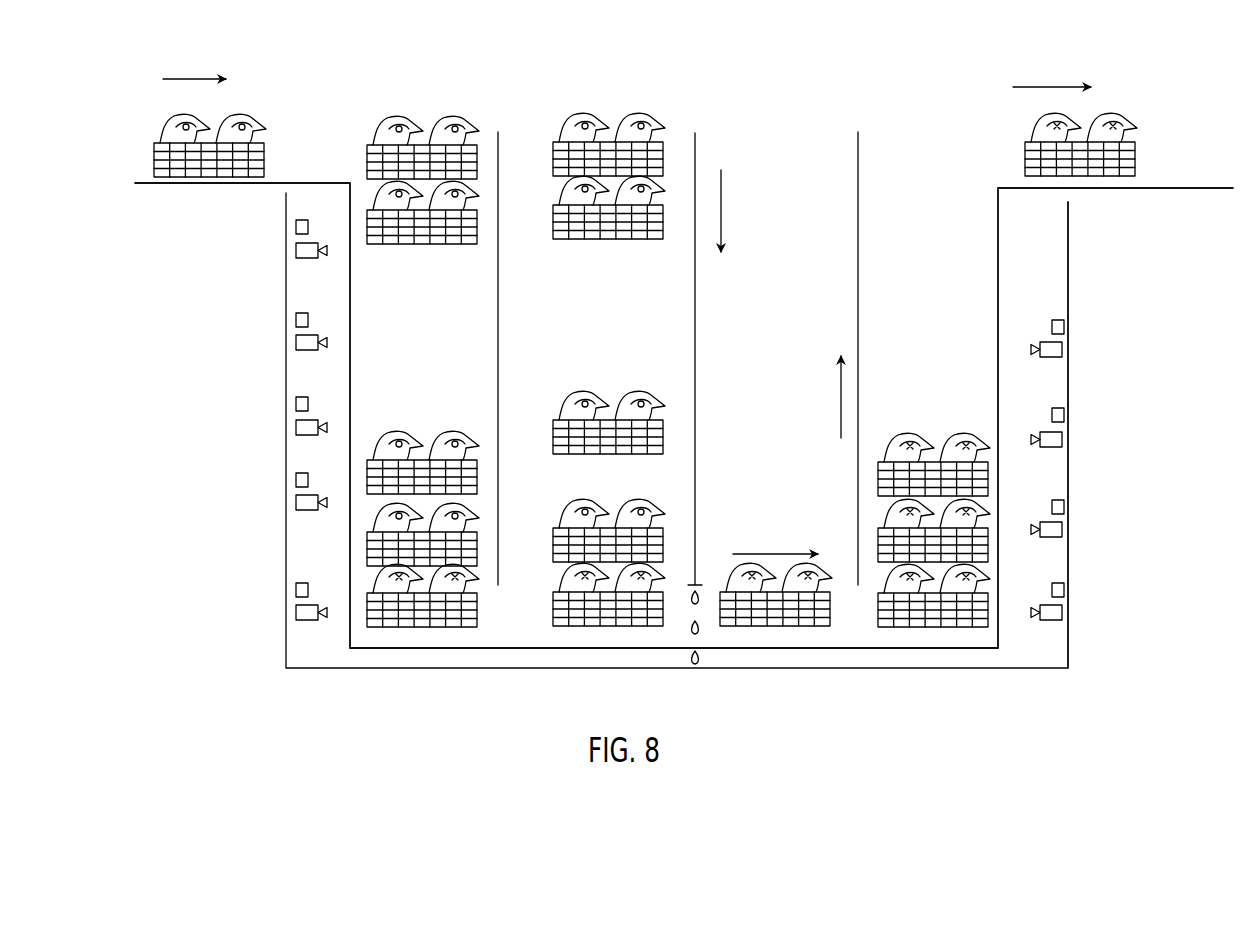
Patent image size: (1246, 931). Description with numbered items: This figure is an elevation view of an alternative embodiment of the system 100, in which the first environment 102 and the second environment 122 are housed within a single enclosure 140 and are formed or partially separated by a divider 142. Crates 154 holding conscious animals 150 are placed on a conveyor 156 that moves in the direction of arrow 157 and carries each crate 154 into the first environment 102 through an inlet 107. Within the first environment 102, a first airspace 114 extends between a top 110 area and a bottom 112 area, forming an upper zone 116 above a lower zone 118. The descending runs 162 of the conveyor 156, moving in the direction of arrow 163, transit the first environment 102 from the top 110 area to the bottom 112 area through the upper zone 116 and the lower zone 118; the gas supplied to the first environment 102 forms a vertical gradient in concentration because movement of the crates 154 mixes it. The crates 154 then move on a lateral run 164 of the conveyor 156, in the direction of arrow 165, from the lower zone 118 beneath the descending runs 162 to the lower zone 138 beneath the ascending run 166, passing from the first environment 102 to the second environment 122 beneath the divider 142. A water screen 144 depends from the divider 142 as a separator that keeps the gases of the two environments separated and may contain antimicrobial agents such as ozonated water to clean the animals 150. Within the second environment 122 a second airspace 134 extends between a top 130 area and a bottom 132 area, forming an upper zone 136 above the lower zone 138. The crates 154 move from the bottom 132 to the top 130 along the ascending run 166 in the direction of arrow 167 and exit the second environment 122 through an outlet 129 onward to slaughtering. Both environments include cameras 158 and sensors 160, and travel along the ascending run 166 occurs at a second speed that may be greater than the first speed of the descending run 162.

The system 100 is at (703, 112).
The first environment 102 is at (472, 95).
The inlet 107 is at (348, 108).
The top area 110 is at (316, 291).
The bottom area 112 is at (306, 566).
The first airspace 114 is at (573, 85).
The upper zone 116 is at (355, 275).
The lower zone 118 is at (320, 548).
The second environment 122 is at (920, 150).
The outlet 129 is at (992, 150).
The top area 130 is at (1033, 232).
The bottom area 132 is at (1050, 563).
The second airspace 134 is at (855, 112).
The upper zone 136 is at (982, 294).
The lower zone 138 is at (985, 470).
The enclosure 140 is at (285, 378).
The divider 142 is at (697, 318).
The water screen 144 is at (696, 673).
The animal 150 is at (176, 124).
The crate 154 is at (264, 155).
The conveyor 156 is at (168, 188).
The arrow 157 is at (193, 78).
The camera 158 is at (295, 250).
The sensor 160 is at (295, 228).
The descending run 162 is at (352, 418).
The arrow 163 is at (722, 208).
The lateral run 164 is at (633, 650).
The arrow 165 is at (762, 553).
The ascending run 166 is at (998, 385).
The arrow 167 is at (841, 415).